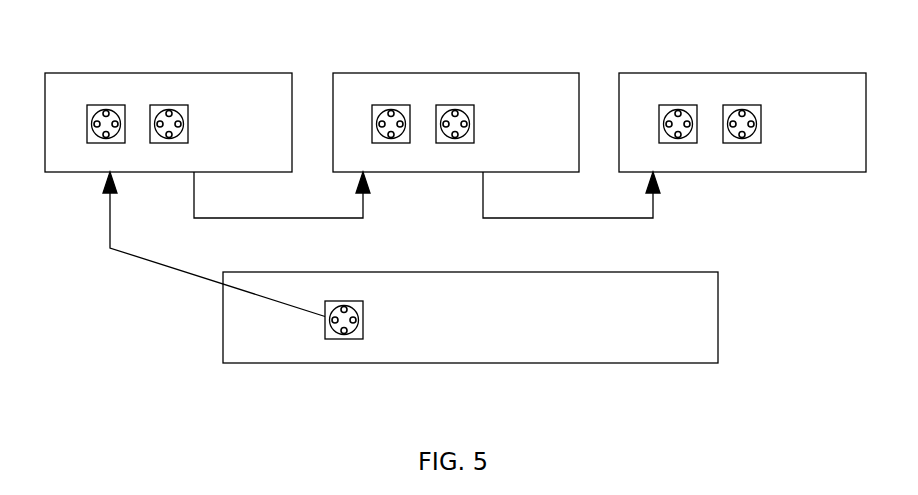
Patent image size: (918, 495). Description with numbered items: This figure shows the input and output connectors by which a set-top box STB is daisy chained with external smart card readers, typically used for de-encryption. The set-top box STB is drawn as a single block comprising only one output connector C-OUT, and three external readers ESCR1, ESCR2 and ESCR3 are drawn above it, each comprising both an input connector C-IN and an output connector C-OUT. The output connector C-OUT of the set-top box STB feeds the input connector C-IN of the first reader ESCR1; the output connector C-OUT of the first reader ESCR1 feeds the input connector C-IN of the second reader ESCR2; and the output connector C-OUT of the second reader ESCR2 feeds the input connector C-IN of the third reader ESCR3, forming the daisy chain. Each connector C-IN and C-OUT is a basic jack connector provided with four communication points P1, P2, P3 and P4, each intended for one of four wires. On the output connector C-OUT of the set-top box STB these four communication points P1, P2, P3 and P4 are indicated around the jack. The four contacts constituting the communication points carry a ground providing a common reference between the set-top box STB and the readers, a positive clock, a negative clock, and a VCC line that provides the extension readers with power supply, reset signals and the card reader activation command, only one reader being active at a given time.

The first external smart card reader ESCR1 is at (150, 73).
The second external smart card reader ESCR2 is at (468, 43).
The third external smart card reader ESCR3 is at (757, 43).
The input connector C-IN is at (97, 105).
The output connector C-OUT is at (173, 105).
The first communication point P1 is at (344, 282).
The second communication point P2 is at (306, 328).
The third communication point P3 is at (382, 327).
The fourth communication point P4 is at (344, 358).
The set-top box STB is at (615, 311).